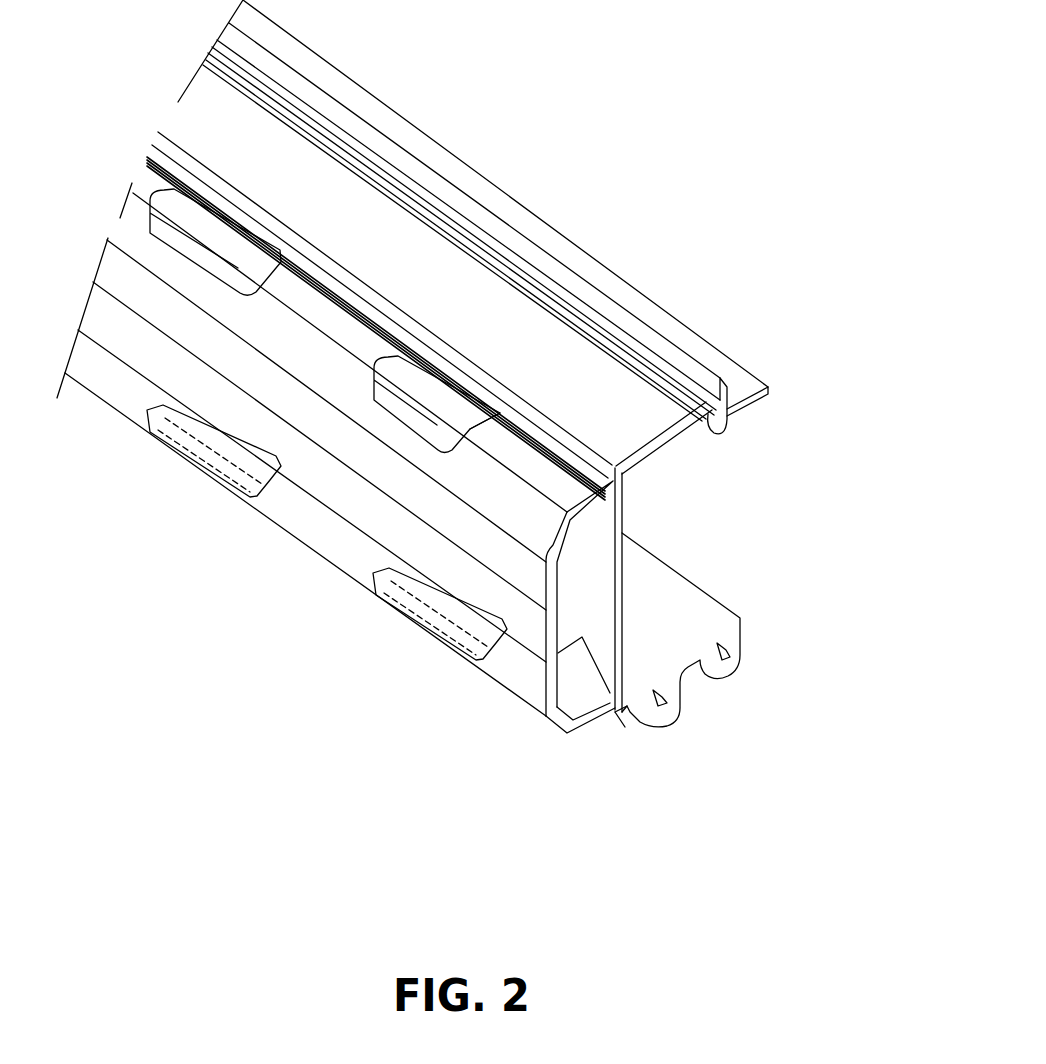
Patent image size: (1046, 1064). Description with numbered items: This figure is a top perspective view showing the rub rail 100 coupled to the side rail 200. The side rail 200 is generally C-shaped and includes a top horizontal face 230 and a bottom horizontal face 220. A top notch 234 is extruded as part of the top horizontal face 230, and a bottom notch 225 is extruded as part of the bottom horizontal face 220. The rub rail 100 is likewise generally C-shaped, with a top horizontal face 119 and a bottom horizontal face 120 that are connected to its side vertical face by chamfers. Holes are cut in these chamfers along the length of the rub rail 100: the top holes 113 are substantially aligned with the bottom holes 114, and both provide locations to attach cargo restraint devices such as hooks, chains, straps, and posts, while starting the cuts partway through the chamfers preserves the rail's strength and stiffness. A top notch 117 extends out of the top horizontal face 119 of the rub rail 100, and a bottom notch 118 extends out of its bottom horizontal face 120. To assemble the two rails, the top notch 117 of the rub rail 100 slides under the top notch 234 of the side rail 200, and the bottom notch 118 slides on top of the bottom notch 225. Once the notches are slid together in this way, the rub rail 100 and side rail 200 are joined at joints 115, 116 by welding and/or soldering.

The rub rail 100 is at (335, 449).
The top holes 113 is at (325, 249).
The bottom holes 114 is at (327, 569).
The joint 115 is at (435, 316).
The joint 116 is at (611, 762).
The top notch 117 is at (647, 590).
The bottom notch 118 is at (528, 694).
The top horizontal face 119 is at (538, 319).
The bottom horizontal face 120 is at (578, 765).
The side rail 200 is at (558, 237).
The bottom horizontal face 220 is at (703, 630).
The bottom notch 225 is at (643, 740).
The top horizontal face 230 is at (459, 234).
The top notch 234 is at (680, 436).